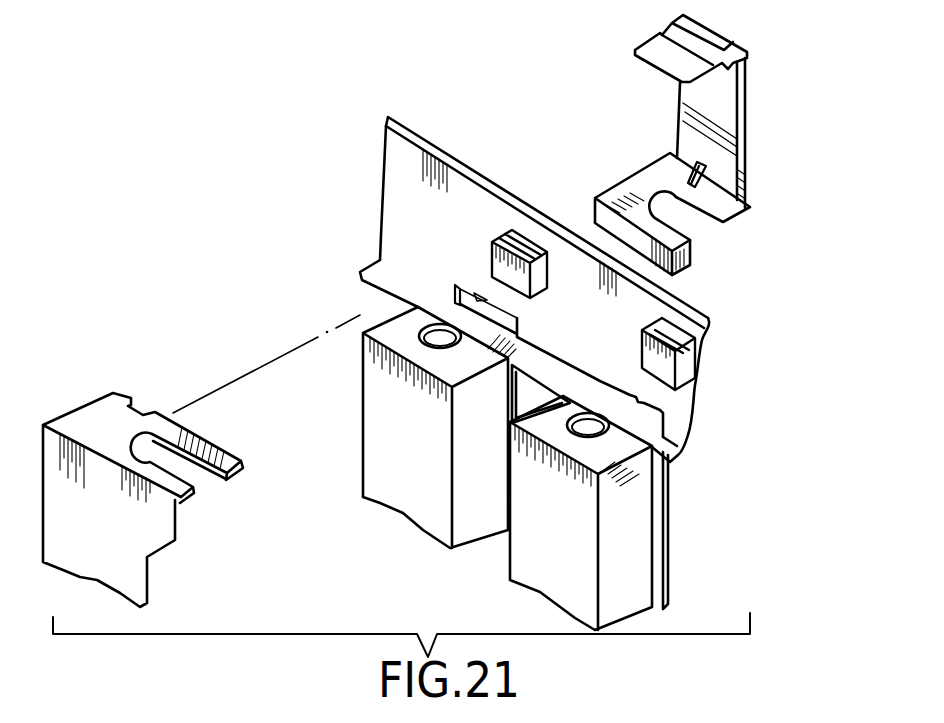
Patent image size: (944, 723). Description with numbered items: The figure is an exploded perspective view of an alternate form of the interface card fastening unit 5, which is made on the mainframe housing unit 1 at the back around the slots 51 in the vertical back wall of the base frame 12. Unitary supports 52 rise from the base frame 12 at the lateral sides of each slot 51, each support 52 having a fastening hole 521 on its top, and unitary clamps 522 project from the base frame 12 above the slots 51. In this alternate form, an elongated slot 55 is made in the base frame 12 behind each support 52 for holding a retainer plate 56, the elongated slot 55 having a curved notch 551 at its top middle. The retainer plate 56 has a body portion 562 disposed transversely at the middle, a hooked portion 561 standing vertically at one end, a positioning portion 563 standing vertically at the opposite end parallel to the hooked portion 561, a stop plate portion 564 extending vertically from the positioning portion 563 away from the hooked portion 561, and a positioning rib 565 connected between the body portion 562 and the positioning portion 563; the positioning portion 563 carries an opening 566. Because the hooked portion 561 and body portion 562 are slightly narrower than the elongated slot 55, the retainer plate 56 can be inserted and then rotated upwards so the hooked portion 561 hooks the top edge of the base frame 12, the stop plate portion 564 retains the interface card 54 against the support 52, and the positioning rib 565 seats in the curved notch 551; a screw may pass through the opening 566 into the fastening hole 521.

The mainframe housing unit 1 is at (447, 135).
The interface card fastening unit 5 is at (516, 114).
The base frame 12 is at (397, 175).
The slot 51 is at (537, 393).
The support 52 is at (362, 393).
The fastening hole 521 is at (442, 343).
The clamp 522 is at (530, 240).
The interface card 54 is at (113, 392).
The elongated slot 55 is at (455, 285).
The curved notch 551 is at (470, 292).
The retainer plate 56 is at (645, 125).
The hooked portion 561 is at (718, 50).
The body portion 562 is at (722, 103).
The positioning portion 563 is at (635, 183).
The stop plate portion 564 is at (680, 263).
The positioning rib 565 is at (705, 180).
The opening 566 is at (680, 217).